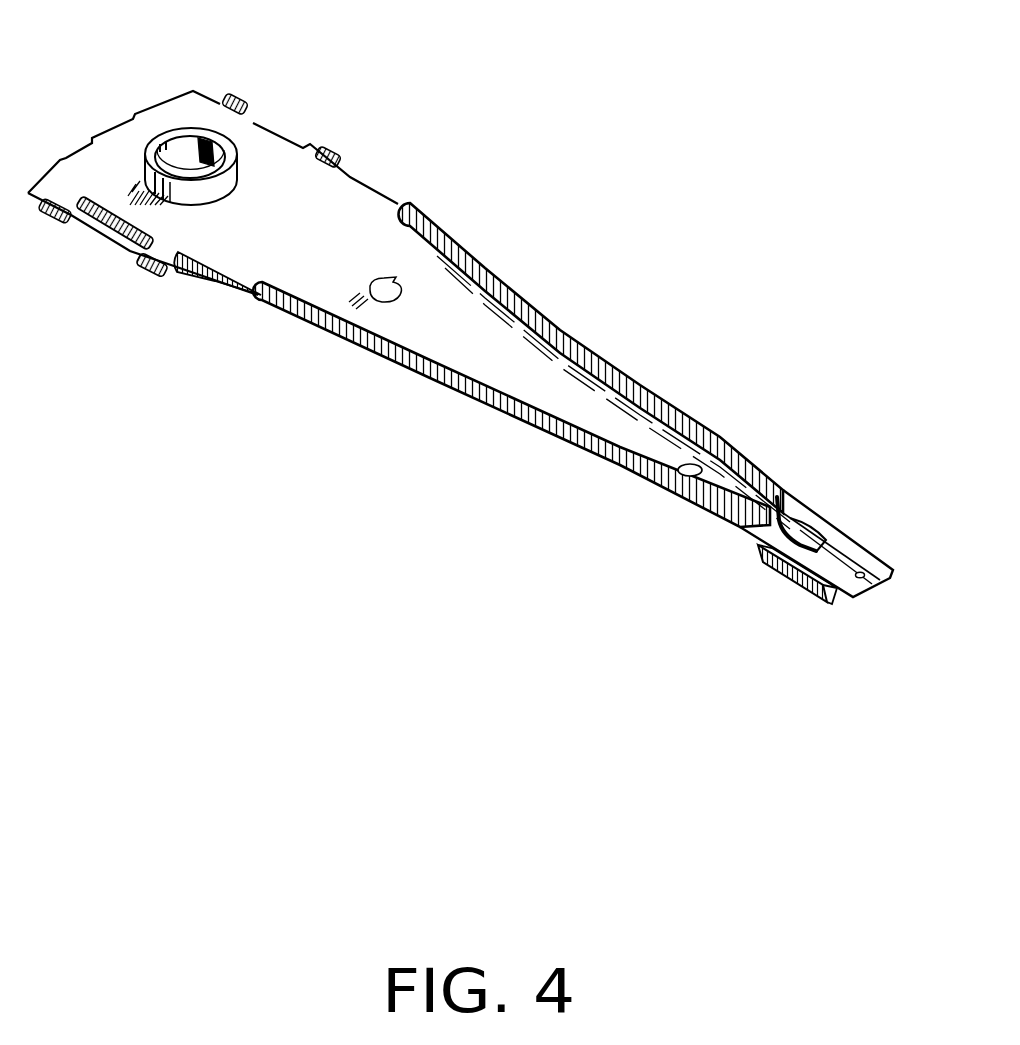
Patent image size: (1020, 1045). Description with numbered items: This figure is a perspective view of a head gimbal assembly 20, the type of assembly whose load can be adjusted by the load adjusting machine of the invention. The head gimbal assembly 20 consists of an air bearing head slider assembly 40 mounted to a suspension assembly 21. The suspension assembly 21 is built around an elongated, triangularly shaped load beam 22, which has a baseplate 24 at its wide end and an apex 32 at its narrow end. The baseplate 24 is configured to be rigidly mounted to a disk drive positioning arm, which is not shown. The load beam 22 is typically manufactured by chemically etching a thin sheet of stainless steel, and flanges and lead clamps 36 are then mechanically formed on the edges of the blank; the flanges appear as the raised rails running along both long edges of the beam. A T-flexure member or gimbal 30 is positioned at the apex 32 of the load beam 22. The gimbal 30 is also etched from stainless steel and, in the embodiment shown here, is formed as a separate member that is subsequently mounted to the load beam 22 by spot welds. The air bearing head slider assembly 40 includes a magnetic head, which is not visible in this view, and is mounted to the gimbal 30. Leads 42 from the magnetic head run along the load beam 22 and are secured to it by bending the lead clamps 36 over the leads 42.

The head gimbal assembly 20 is at (463, 362).
The suspension assembly 21 is at (494, 416).
The load beam 22 is at (613, 371).
The baseplate 24 is at (218, 170).
The gimbal 30 is at (816, 607).
The apex 32 is at (838, 478).
The lead clamps 36 is at (169, 295).
The air bearing head slider assembly 40 is at (767, 604).
The leads 42 is at (97, 136).